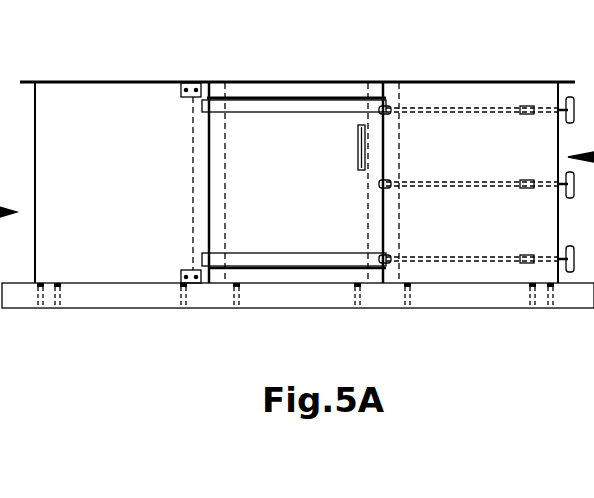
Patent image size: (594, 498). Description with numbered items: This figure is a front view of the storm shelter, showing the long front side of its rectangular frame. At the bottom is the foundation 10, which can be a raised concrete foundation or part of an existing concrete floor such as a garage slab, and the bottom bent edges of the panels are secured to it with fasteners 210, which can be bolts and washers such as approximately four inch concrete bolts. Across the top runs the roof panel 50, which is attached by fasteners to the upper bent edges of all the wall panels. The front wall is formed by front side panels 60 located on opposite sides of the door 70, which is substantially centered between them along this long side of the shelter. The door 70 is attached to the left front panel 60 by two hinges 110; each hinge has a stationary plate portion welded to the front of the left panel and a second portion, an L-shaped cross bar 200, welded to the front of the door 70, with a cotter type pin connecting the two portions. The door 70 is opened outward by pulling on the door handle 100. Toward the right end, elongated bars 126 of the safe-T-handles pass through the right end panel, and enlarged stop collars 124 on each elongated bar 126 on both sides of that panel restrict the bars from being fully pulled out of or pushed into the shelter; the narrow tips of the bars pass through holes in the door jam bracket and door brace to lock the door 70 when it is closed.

The foundation 10 is at (298, 324).
The roof panel 50 is at (297, 59).
The front side panel 60 is at (59, 161).
The door 70 is at (296, 160).
The door handle 100 is at (313, 169).
The hinge 110 is at (146, 144).
The stop collar 124 is at (480, 184).
The elongated bar 126 is at (442, 184).
The L-shaped cross bar 200 is at (289, 309).
The fastener 210 is at (295, 324).